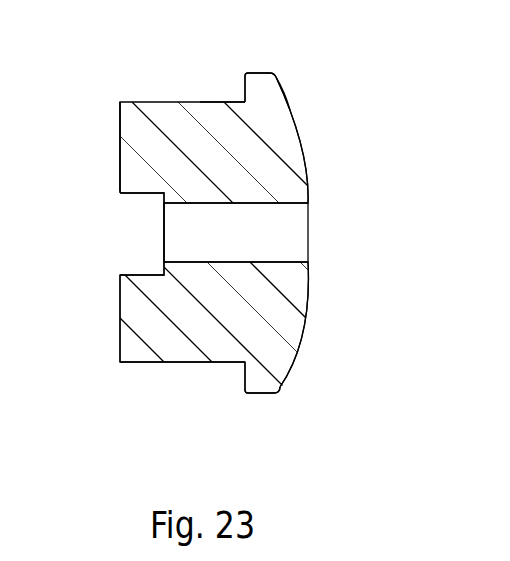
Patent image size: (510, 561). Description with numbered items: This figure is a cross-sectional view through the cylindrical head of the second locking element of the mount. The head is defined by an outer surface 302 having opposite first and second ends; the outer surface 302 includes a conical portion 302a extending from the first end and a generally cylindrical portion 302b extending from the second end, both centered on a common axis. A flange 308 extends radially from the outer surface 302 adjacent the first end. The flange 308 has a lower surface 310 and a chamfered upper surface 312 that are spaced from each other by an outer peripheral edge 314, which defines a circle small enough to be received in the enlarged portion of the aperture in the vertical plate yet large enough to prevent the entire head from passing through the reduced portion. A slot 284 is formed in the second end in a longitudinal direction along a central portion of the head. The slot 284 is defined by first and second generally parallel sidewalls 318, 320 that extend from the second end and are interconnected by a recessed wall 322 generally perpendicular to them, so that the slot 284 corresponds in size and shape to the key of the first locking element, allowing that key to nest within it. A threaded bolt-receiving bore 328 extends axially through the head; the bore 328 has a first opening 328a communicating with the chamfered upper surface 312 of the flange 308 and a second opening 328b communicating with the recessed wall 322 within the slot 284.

The slot 284 is at (108, 243).
The outer surface 302 is at (186, 364).
The conical portion 302a is at (226, 364).
The cylindrical portion 302b is at (138, 369).
The flange 308 is at (292, 377).
The lower surface 310 is at (242, 99).
The chamfered upper surface 312 is at (286, 101).
The outer peripheral edge 314 is at (262, 73).
The first sidewall 318 is at (140, 194).
The second sidewall 320 is at (138, 272).
The recessed wall 322 is at (148, 192).
The threaded bolt-receiving bore 328 is at (296, 221).
The first opening 328a is at (297, 262).
The second opening 328b is at (166, 205).